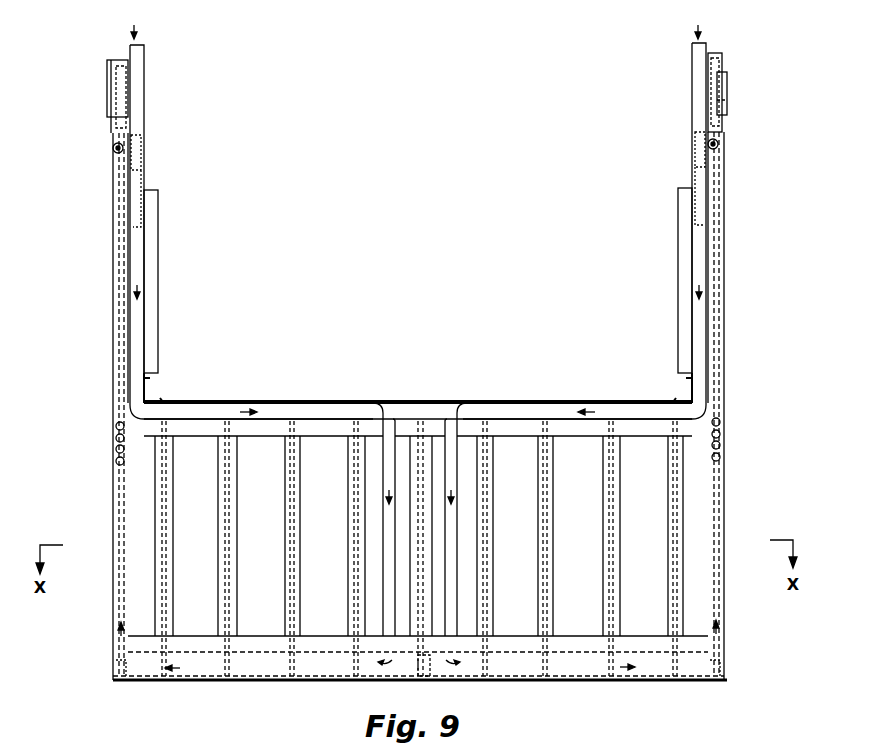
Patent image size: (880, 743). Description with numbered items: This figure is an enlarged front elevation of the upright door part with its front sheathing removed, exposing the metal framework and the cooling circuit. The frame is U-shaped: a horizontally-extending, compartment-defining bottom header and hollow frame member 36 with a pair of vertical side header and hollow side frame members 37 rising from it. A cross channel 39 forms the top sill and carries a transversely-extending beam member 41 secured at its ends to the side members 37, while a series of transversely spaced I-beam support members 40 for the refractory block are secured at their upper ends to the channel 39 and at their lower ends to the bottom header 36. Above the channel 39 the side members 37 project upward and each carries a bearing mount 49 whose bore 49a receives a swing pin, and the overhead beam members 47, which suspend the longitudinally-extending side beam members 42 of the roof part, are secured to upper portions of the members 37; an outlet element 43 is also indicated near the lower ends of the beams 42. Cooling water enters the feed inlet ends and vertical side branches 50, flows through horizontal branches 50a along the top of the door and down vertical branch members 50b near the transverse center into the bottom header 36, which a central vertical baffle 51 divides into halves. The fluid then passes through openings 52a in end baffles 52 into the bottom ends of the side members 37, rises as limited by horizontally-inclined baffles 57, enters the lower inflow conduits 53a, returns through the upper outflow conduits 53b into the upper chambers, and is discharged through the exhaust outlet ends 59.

The bottom header and hollow frame member 36 is at (605, 681).
The vertical side header and hollow side frame member 37 is at (113, 246).
The cross channel 39 is at (497, 436).
The I-beam support member 40 is at (553, 520).
The beam member 41 is at (425, 402).
The side beam member 42 is at (158, 266).
The duct outlet 43 is at (156, 398).
The overhead beam member 47 is at (143, 163).
The bearing mount 49 is at (107, 84).
The bore 49a is at (722, 104).
The feed inlet end / vertical side branch 50 is at (144, 82).
The horizontal branch 50a is at (340, 403).
The vertical branch member 50b is at (383, 492).
The central vertical baffle 51 is at (425, 681).
The end baffle 52 is at (136, 681).
The passageway, port or opening 52a is at (113, 665).
The lower side conduit member 53a is at (116, 465).
The upper side conduit member 53b is at (116, 430).
The horizontally-inclined baffle 57 is at (116, 449).
The discharge or exhaust outlet end 59 is at (113, 149).